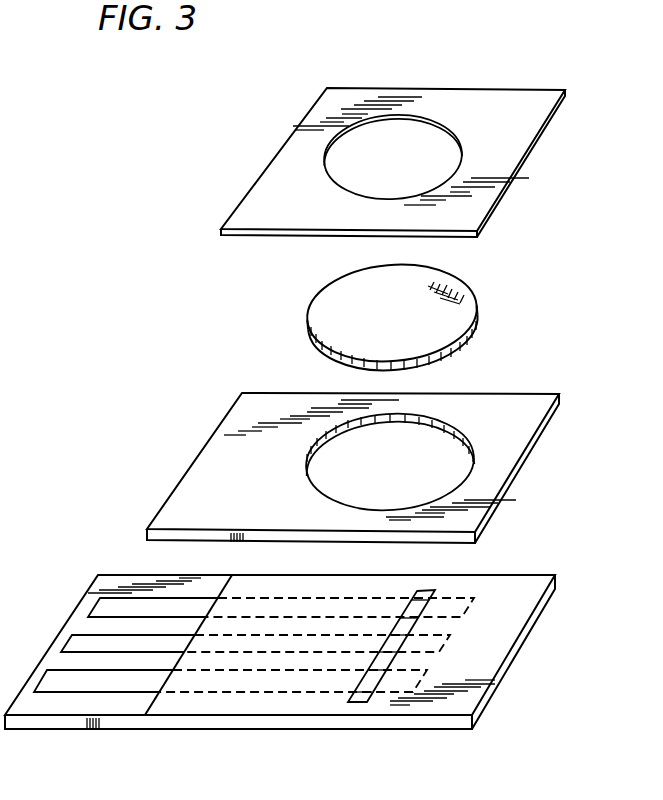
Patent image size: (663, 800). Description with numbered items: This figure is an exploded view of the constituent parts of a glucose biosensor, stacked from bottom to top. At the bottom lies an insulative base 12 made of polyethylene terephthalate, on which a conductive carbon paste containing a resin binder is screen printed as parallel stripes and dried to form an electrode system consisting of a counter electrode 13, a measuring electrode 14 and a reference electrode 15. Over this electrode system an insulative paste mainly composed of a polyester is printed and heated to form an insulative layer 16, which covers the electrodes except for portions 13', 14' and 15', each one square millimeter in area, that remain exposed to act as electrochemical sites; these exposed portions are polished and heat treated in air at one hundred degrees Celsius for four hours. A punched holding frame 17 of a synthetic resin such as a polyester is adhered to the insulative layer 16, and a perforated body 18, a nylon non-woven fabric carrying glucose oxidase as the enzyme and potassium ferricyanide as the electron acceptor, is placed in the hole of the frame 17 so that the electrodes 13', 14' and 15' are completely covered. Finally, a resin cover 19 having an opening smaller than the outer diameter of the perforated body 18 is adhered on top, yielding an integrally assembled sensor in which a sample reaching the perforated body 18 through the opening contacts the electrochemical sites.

The insulative base 12 is at (72, 723).
The counter electrode 13 is at (224, 662).
The measuring electrode 14 is at (248, 624).
The reference electrode 15 is at (271, 584).
The exposed portion of counter electrode 13' is at (353, 718).
The exposed portion of measuring electrode 14' is at (382, 599).
The exposed portion of reference electrode 15' is at (391, 623).
The insulative layer 16 is at (512, 585).
The holding frame 17 is at (212, 458).
The perforated body 18 is at (320, 312).
The resin cover 19 is at (268, 183).